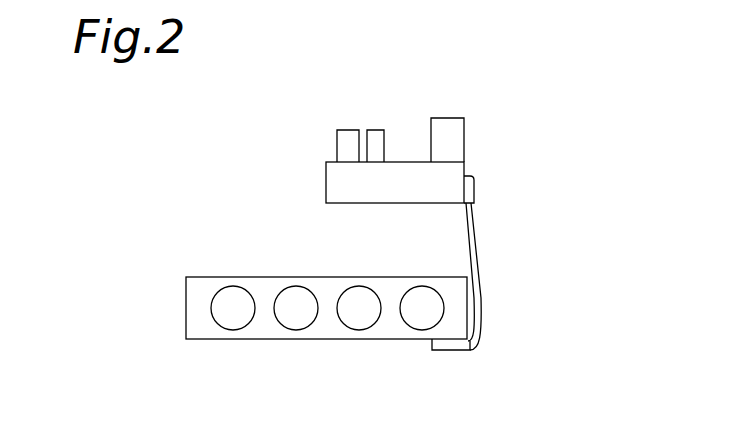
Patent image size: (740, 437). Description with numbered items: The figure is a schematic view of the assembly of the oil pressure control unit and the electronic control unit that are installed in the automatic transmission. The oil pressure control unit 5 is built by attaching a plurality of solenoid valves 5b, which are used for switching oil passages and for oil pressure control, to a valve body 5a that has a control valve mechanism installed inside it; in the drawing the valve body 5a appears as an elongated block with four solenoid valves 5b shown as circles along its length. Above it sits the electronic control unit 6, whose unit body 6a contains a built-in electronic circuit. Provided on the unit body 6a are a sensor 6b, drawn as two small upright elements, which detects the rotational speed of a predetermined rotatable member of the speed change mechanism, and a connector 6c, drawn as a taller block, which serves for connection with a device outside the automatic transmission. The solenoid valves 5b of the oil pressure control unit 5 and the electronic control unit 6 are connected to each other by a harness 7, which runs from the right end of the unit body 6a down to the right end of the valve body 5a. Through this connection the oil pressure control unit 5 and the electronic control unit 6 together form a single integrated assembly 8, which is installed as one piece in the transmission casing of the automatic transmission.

The oil pressure control unit 5 is at (200, 263).
The valve body 5a is at (250, 340).
The solenoid valves 5b is at (302, 331).
The electronic control unit 6 is at (309, 142).
The unit body 6a is at (326, 181).
The sensor 6b is at (377, 129).
The connector 6c is at (447, 118).
The harness 7 is at (475, 255).
The integrated assembly 8 is at (540, 123).